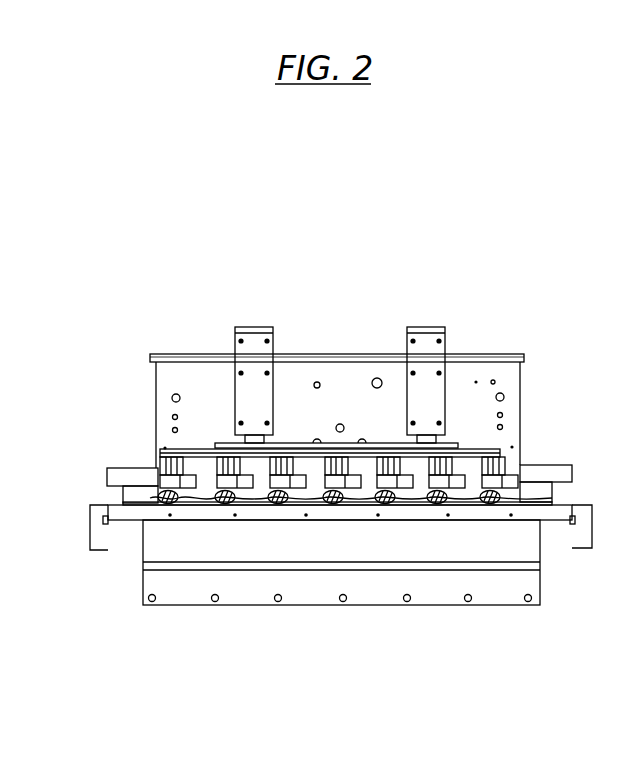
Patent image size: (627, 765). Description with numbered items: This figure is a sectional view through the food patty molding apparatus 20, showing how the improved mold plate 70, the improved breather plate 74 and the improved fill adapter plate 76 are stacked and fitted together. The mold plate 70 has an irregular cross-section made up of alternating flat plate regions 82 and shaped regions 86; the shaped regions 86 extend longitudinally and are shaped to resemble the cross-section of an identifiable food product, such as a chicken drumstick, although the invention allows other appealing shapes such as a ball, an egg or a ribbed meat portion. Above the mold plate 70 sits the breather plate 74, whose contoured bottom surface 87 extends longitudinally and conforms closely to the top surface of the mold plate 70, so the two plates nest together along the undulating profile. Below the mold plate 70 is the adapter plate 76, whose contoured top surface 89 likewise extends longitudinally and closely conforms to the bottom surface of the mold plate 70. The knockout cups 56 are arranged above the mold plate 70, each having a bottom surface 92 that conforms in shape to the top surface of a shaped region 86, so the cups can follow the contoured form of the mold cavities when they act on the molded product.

The apparatus 20 is at (283, 328).
The knockout cups 56 is at (160, 482).
The mold plate 70 is at (303, 445).
The breather plate 74 is at (132, 488).
The fill adapter plate 76 is at (198, 505).
The flat plate regions 82 is at (473, 470).
The shaped regions 86 is at (505, 480).
The contoured bottom surface 87 is at (272, 504).
The contoured top surface 89 is at (340, 505).
The bottom surface 92 is at (170, 507).